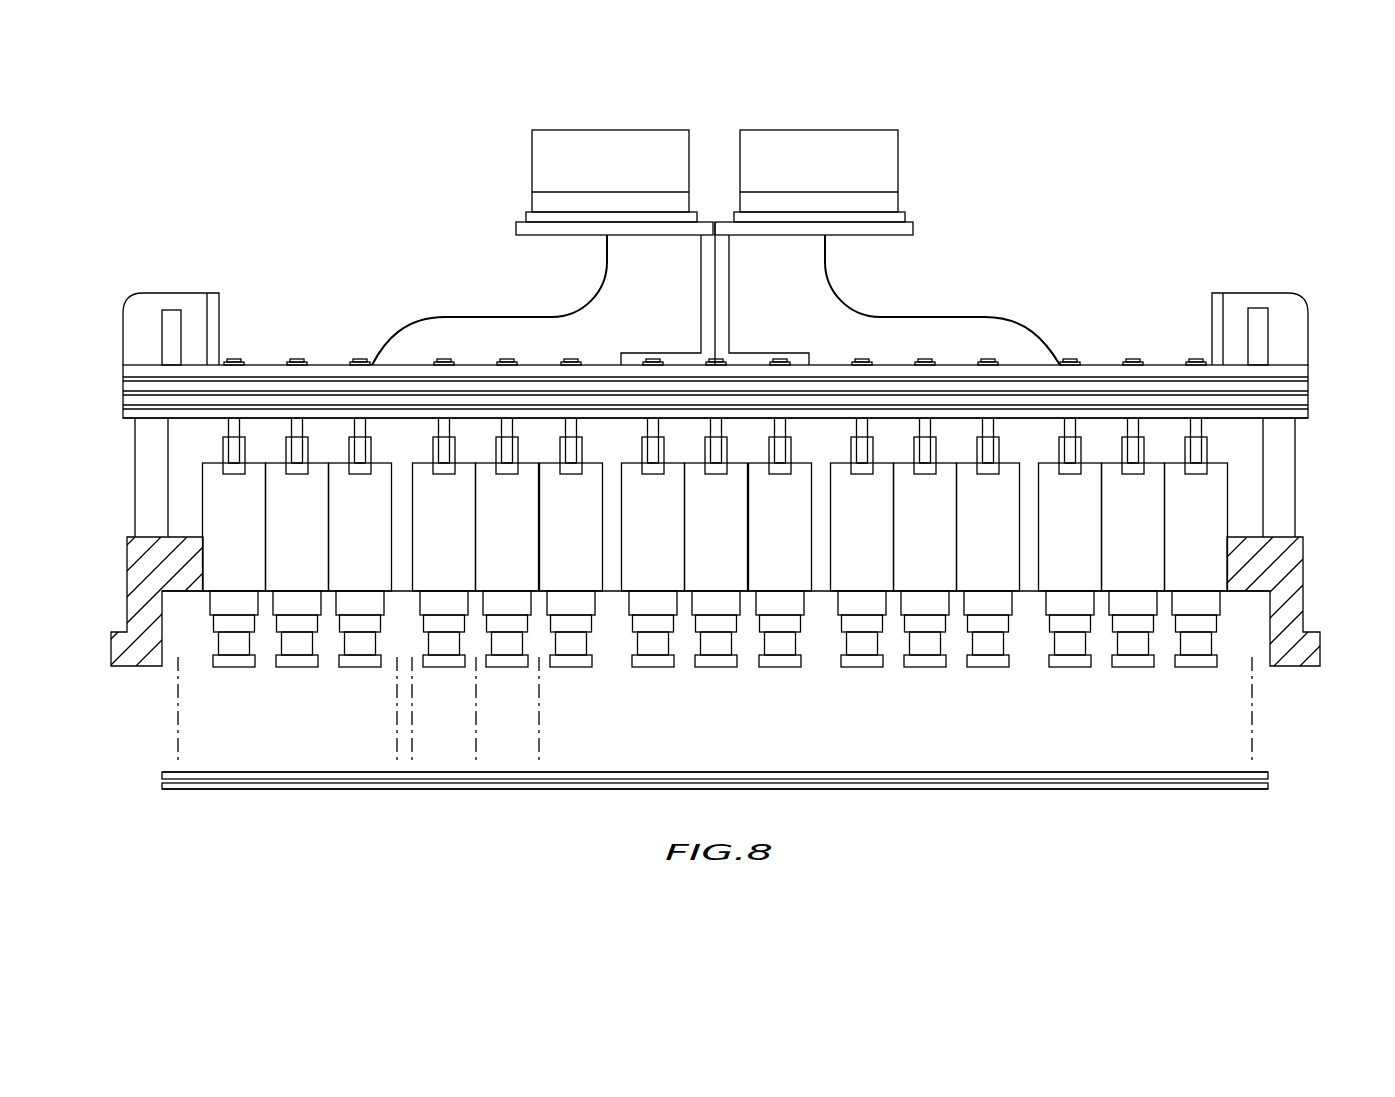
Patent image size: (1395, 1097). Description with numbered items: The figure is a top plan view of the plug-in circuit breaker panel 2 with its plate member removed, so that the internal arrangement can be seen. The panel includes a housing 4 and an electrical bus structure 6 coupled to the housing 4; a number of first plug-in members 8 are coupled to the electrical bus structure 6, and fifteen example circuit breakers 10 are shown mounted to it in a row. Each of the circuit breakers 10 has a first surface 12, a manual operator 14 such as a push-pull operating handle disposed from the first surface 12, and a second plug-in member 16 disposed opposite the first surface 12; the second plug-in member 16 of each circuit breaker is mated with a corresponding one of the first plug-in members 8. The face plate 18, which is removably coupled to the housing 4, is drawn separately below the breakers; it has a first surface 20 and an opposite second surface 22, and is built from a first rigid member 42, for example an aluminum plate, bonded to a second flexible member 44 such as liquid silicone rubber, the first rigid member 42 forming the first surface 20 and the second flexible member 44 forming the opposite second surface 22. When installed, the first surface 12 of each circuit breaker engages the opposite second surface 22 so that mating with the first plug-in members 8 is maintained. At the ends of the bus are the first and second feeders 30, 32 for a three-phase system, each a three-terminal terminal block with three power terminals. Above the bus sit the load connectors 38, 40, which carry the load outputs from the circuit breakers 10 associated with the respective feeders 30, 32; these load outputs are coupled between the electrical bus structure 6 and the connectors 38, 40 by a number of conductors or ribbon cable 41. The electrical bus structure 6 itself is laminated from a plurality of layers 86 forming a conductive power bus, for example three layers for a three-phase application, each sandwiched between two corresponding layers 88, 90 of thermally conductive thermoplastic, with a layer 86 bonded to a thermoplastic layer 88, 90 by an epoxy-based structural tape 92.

The plug-in circuit breaker panel 2 is at (322, 237).
The housing 4 is at (1306, 590).
The electrical bus structure 6 is at (729, 390).
The first plug-in members 8 is at (1203, 426).
The circuit breakers 10 is at (970, 488).
The first surface 12 is at (1039, 463).
The manual operator 14 is at (357, 668).
The second plug-in member 16 is at (1208, 452).
The face plate 18 is at (694, 798).
The first surface 20 is at (300, 789).
The opposite second surface 22 is at (300, 772).
The first feeder 30 is at (1294, 308).
The second feeder 32 is at (132, 309).
The load connector 38 is at (898, 158).
The load connector 40 is at (532, 162).
The ribbon cable 41 is at (445, 316).
The first rigid member 42 is at (162, 783).
The second flexible member 44 is at (162, 775).
The layers 86 is at (257, 407).
The layer of thermally conductive thermoplastic 88 is at (123, 420).
The layer of thermally conductive thermoplastic 90 is at (127, 396).
The epoxy-based structural tape 92 is at (124, 410).